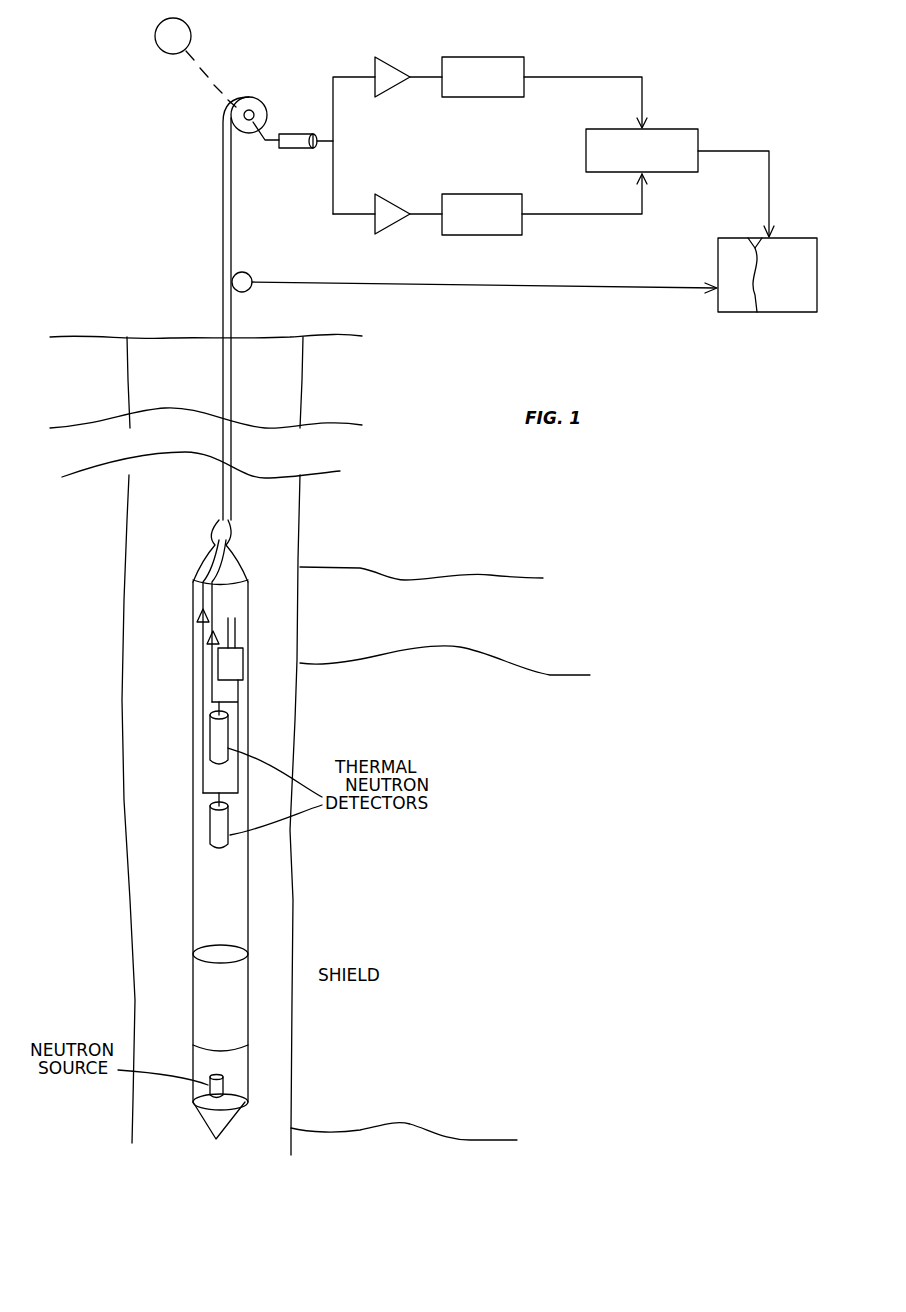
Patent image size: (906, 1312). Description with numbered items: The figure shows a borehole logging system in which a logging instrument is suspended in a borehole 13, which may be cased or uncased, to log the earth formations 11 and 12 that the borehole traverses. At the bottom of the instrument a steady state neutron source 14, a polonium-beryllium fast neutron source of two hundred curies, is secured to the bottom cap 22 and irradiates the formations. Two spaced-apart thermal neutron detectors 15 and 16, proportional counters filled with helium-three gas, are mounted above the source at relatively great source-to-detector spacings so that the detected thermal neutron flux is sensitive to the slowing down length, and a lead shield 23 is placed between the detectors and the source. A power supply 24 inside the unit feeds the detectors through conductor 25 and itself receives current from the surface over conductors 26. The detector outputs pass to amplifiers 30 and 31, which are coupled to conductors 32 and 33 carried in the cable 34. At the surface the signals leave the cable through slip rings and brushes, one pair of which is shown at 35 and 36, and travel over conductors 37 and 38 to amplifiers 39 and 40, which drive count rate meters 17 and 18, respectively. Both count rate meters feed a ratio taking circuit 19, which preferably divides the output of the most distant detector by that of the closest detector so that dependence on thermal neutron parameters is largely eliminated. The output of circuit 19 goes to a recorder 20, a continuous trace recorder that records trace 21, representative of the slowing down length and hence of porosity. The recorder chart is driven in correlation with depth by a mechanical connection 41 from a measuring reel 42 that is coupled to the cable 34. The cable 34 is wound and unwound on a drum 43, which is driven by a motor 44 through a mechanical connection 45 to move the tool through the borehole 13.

The formation 11 is at (445, 621).
The formation 12 is at (404, 1006).
The borehole 13 is at (300, 503).
The steady state neutron source 14 is at (224, 1087).
The thermal neutron detector 15 is at (230, 812).
The thermal neutron detector 16 is at (230, 733).
The count rate meter 17 is at (484, 56).
The count rate meter 18 is at (475, 193).
The ratio taking circuit 19 is at (665, 129).
The recorder 20 is at (788, 236).
The trace 21 is at (760, 288).
The bottom cap 22 is at (225, 1126).
The shield 23 is at (248, 990).
The power supply 24 is at (245, 670).
The conductor 25 is at (240, 693).
The conductors 26 is at (237, 631).
The amplifier 30 is at (197, 616).
The amplifier 31 is at (207, 638).
The conductor 32 is at (207, 570).
The conductor 33 is at (225, 572).
The cable 34 is at (232, 383).
The slip ring 35 is at (255, 111).
The brush 36 is at (268, 137).
The conductor 37 is at (352, 74).
The conductor 38 is at (350, 210).
The amplifier 39 is at (400, 68).
The amplifier 40 is at (390, 226).
The mechanical connection 41 is at (532, 283).
The measuring reel 42 is at (250, 275).
The drum 43 is at (252, 98).
The motor 44 is at (156, 33).
The mechanical connection 45 is at (218, 86).